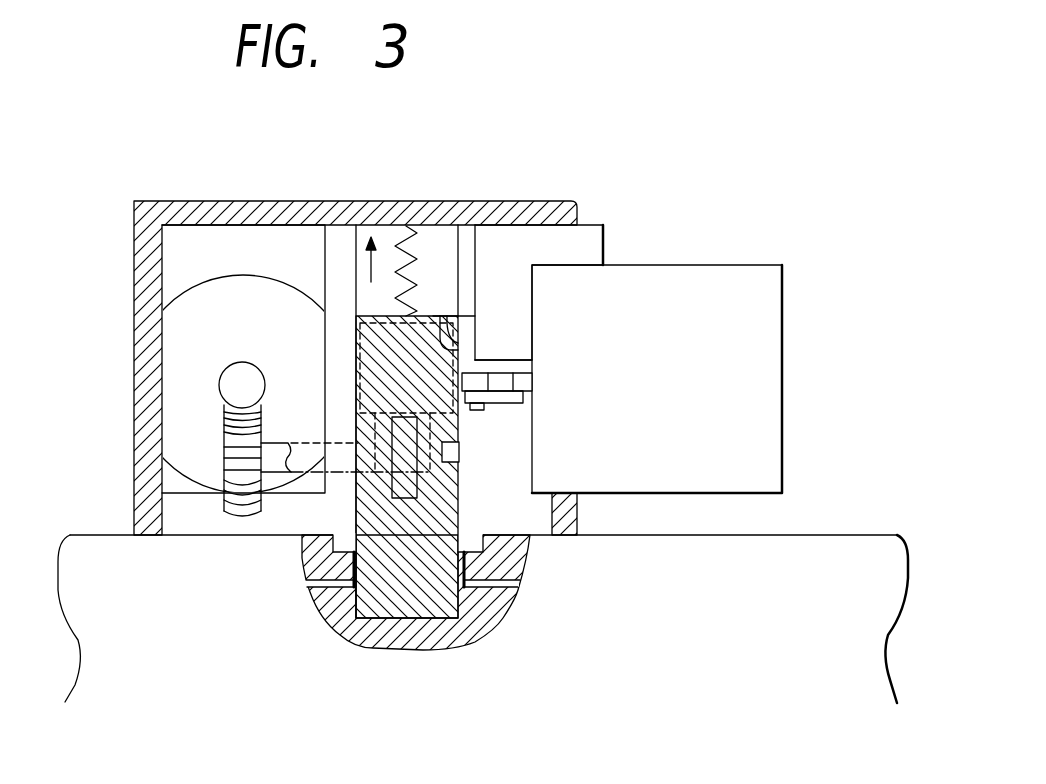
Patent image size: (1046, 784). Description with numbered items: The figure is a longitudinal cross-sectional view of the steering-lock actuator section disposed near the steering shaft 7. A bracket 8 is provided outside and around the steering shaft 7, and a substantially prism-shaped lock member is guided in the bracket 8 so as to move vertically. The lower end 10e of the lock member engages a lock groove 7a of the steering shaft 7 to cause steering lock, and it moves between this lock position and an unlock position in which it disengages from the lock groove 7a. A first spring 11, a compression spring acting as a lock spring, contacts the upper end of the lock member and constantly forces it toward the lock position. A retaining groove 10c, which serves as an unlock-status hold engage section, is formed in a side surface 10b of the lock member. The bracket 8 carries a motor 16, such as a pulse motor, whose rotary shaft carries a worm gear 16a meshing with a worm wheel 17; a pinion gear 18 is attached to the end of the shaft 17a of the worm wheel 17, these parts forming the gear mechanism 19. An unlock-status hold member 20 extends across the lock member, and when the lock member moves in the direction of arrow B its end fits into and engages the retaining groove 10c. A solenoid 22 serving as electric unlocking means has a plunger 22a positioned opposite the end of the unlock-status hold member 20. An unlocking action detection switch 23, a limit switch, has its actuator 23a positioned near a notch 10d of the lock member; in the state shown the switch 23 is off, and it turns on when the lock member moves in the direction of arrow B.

The steering shaft 7 is at (330, 587).
The lock groove 7a is at (386, 617).
The bracket 8 is at (250, 201).
The side surface 10b is at (465, 508).
The retaining groove 10c is at (461, 452).
The notch 10d is at (458, 348).
The lower end 10e is at (462, 600).
The first spring 11 is at (427, 300).
The motor 16 is at (162, 288).
The worm gear 16a is at (234, 363).
The worm wheel 17 is at (223, 452).
The shaft 17a is at (278, 443).
The pinion gear 18 is at (390, 513).
The gear mechanism 19 is at (283, 503).
The unlock-status hold member 20 is at (483, 368).
The solenoid 22 is at (782, 360).
The plunger 22a is at (527, 382).
The unlocking action detection switch 23 is at (598, 222).
The actuator 23a is at (465, 316).
The arrow B is at (357, 268).